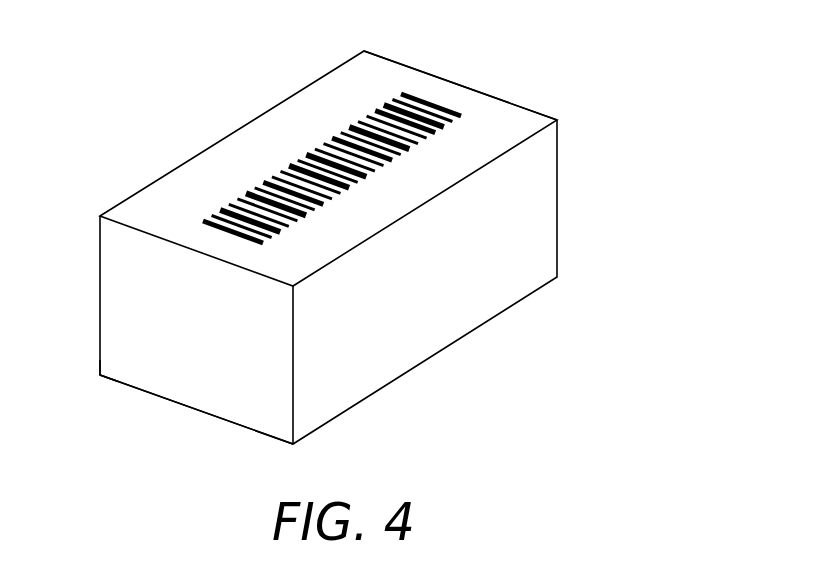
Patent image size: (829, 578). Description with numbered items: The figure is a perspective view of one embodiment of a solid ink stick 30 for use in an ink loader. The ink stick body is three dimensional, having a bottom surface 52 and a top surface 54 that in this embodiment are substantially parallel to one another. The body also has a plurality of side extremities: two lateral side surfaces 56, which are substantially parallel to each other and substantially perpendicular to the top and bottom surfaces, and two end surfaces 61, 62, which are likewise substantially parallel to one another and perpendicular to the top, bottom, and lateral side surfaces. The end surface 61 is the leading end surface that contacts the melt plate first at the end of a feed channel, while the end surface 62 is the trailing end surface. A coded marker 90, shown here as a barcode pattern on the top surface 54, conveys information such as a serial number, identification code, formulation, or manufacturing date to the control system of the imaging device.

The solid ink stick 30 is at (597, 88).
The bottom surface 52 is at (240, 427).
The top surface 54 is at (248, 122).
The side surfaces 56 is at (98, 295).
The leading end surface 61 is at (128, 373).
The trailing end surface 62 is at (458, 83).
The coded marker 90 is at (233, 203).